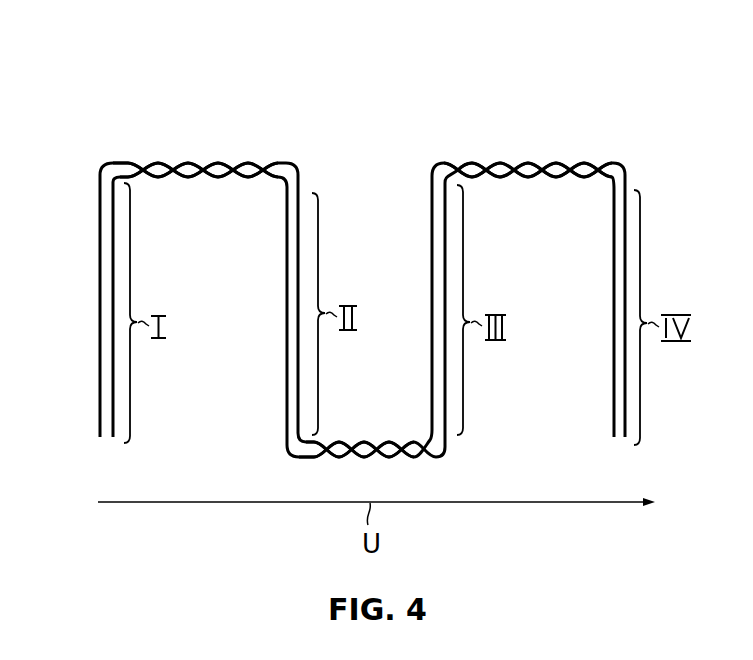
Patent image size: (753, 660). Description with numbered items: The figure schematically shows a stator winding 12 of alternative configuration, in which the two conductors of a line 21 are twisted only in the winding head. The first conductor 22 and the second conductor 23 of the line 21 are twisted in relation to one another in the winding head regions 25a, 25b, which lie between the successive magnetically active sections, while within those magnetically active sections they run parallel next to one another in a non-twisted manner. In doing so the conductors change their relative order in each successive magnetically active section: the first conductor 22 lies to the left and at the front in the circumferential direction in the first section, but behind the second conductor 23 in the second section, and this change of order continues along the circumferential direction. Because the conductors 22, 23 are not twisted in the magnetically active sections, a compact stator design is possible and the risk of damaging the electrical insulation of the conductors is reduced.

The stator winding 12 is at (361, 254).
The line 21 is at (320, 269).
The first conductor 22 is at (100, 197).
The second conductor 23 is at (113, 240).
The winding head region 25a is at (310, 160).
The winding head region 25b is at (452, 440).